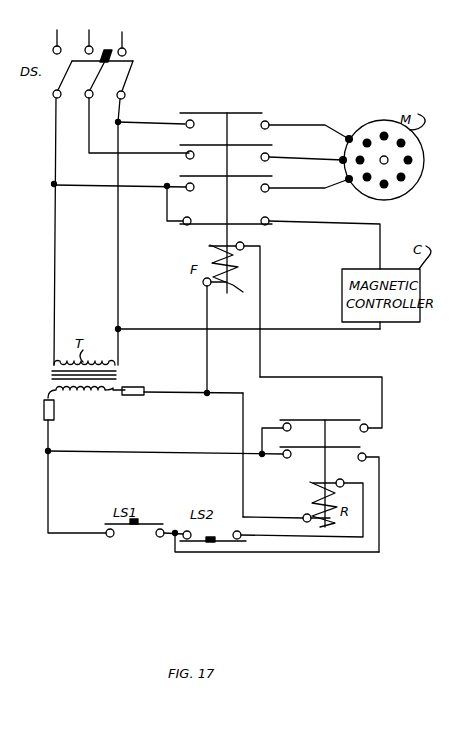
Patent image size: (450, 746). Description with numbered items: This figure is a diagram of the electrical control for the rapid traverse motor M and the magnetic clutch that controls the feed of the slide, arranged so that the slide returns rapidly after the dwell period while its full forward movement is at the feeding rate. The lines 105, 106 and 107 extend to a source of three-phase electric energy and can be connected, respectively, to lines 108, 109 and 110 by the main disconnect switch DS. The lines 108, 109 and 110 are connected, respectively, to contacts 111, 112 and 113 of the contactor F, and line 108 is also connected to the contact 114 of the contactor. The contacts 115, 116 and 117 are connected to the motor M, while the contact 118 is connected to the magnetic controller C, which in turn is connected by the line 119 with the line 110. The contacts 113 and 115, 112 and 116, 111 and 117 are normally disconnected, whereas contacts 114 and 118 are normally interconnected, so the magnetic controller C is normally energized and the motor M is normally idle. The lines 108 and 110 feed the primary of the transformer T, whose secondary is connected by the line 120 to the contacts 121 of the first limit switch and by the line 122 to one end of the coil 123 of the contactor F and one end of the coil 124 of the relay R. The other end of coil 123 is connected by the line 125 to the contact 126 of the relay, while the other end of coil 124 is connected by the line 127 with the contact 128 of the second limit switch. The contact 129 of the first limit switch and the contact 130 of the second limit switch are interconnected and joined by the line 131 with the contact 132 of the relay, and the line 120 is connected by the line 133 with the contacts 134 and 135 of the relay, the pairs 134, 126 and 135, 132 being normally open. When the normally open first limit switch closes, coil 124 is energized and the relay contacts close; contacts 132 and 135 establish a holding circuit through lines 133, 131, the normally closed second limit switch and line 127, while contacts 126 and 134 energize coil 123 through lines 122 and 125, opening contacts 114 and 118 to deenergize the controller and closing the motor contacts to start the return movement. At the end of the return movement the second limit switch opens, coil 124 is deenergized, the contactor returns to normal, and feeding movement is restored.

The line 105 is at (57, 32).
The line 106 is at (87, 30).
The line 107 is at (126, 35).
The line 108 is at (54, 118).
The line 109 is at (89, 118).
The line 110 is at (126, 107).
The contact 111 is at (194, 189).
The contact 112 is at (194, 157).
The contact 113 is at (194, 126).
The contact 114 is at (186, 223).
The contact 115 is at (268, 123).
The contact 116 is at (268, 153).
The contact 117 is at (268, 184).
The contact 118 is at (272, 219).
The line 119 is at (296, 328).
The line 120 is at (50, 483).
The contact 121 is at (109, 541).
The line 122 is at (175, 386).
The coil 123 is at (239, 285).
The coil 124 is at (305, 495).
The line 125 is at (322, 371).
The contact 126 is at (368, 425).
The line 127 is at (378, 533).
The contact 128 is at (258, 518).
The contact 129 is at (159, 541).
The contact 130 is at (193, 544).
The line 131 is at (280, 552).
The contact 132 is at (364, 456).
The line 133 is at (155, 449).
The contact 134 is at (287, 424).
The contact 135 is at (282, 455).